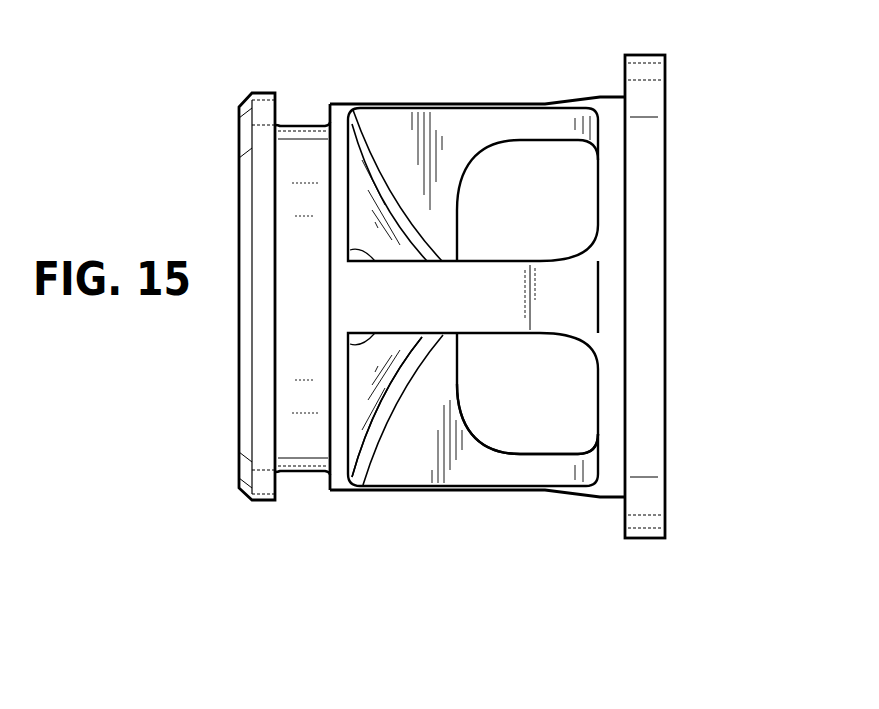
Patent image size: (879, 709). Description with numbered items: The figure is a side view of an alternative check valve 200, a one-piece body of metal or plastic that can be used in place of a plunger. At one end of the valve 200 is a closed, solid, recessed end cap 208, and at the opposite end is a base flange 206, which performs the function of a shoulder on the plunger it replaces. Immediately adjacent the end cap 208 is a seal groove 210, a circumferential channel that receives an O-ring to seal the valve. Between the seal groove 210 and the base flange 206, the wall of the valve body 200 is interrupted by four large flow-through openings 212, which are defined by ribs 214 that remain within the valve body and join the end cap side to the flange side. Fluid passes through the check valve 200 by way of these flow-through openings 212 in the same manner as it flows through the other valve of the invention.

The check valve 200 is at (513, 84).
The base flange 206 is at (665, 153).
The end cap 208 is at (240, 137).
The seal groove 210 is at (305, 124).
The flow-through openings 212 is at (563, 452).
The ribs 214 is at (395, 393).